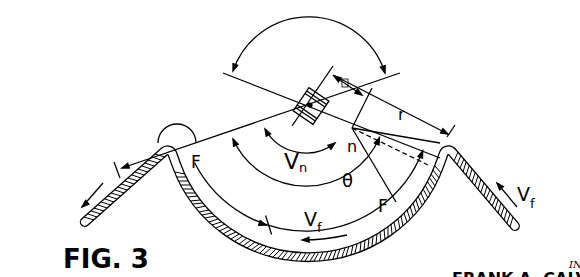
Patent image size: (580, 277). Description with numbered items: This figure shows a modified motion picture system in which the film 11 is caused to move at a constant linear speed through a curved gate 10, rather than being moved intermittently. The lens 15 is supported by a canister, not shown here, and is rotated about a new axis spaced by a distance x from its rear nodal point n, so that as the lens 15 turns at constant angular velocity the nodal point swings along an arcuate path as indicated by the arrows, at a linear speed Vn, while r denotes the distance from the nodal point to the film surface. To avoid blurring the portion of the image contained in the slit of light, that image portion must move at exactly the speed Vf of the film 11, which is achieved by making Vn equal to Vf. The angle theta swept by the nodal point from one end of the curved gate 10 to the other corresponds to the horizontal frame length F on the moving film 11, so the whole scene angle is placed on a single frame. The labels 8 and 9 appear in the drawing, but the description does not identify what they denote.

The nozzle 8 is at (309, 105).
The angle of nozzle discharge 9 is at (309, 45).
The curved gate 10 is at (421, 209).
The film 11 is at (467, 167).
The lens 15 is at (317, 91).